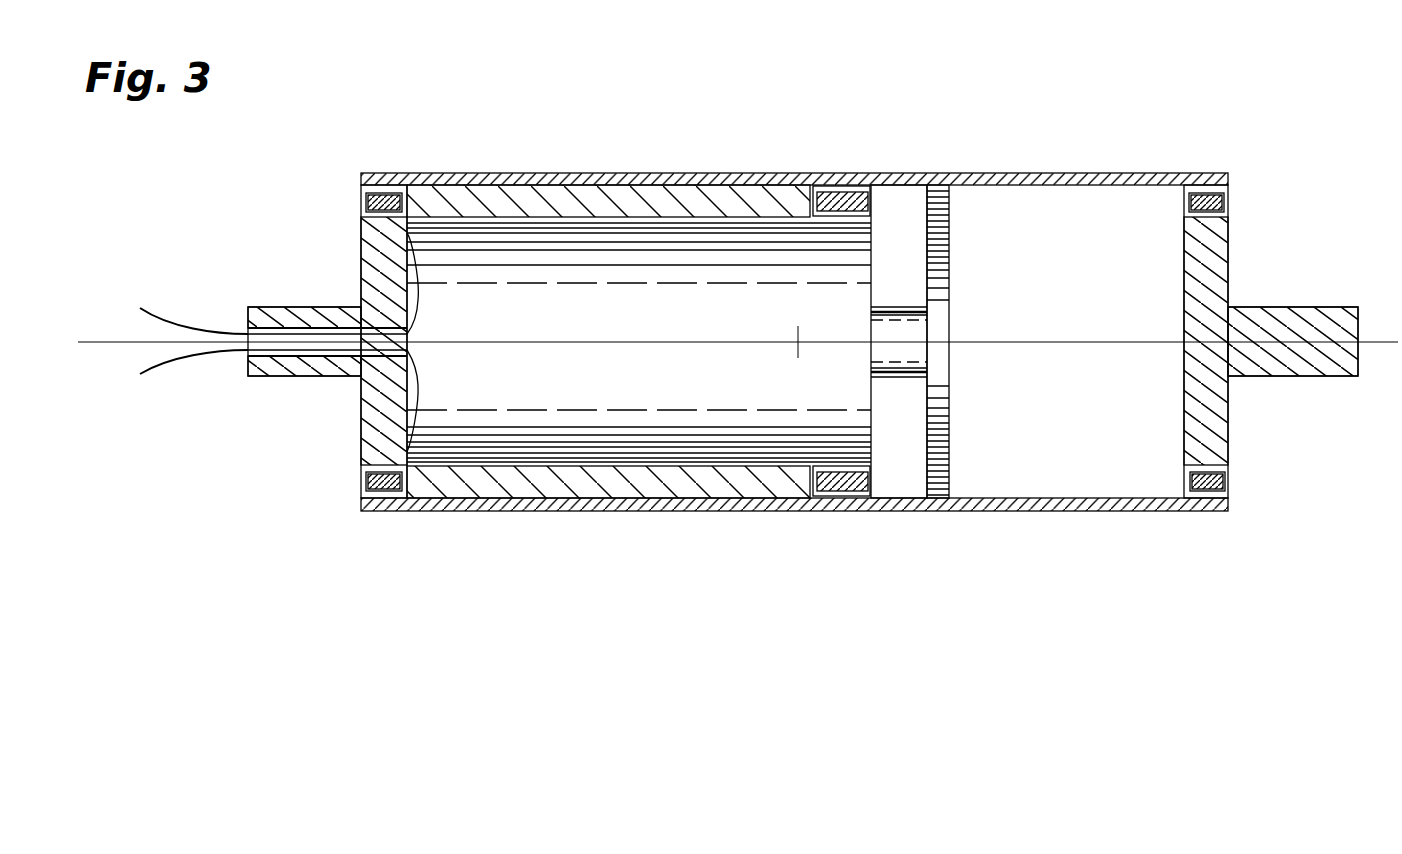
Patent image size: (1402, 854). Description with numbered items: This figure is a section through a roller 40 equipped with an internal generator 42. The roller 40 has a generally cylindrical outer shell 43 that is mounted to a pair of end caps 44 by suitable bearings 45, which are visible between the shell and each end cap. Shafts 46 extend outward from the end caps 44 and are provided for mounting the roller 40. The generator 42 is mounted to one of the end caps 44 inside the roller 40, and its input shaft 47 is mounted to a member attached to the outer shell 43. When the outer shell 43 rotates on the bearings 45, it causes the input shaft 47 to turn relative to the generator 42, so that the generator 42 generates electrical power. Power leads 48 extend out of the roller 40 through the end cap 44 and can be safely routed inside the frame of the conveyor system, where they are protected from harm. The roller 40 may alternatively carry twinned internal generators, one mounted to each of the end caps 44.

The roller 40 is at (993, 147).
The generator 42 is at (520, 275).
The outer shell 43 is at (630, 172).
The end caps 44 is at (383, 418).
The bearings 45 is at (366, 203).
The shafts 46 is at (300, 307).
The input shaft 47 is at (903, 325).
The power leads 48 is at (148, 320).